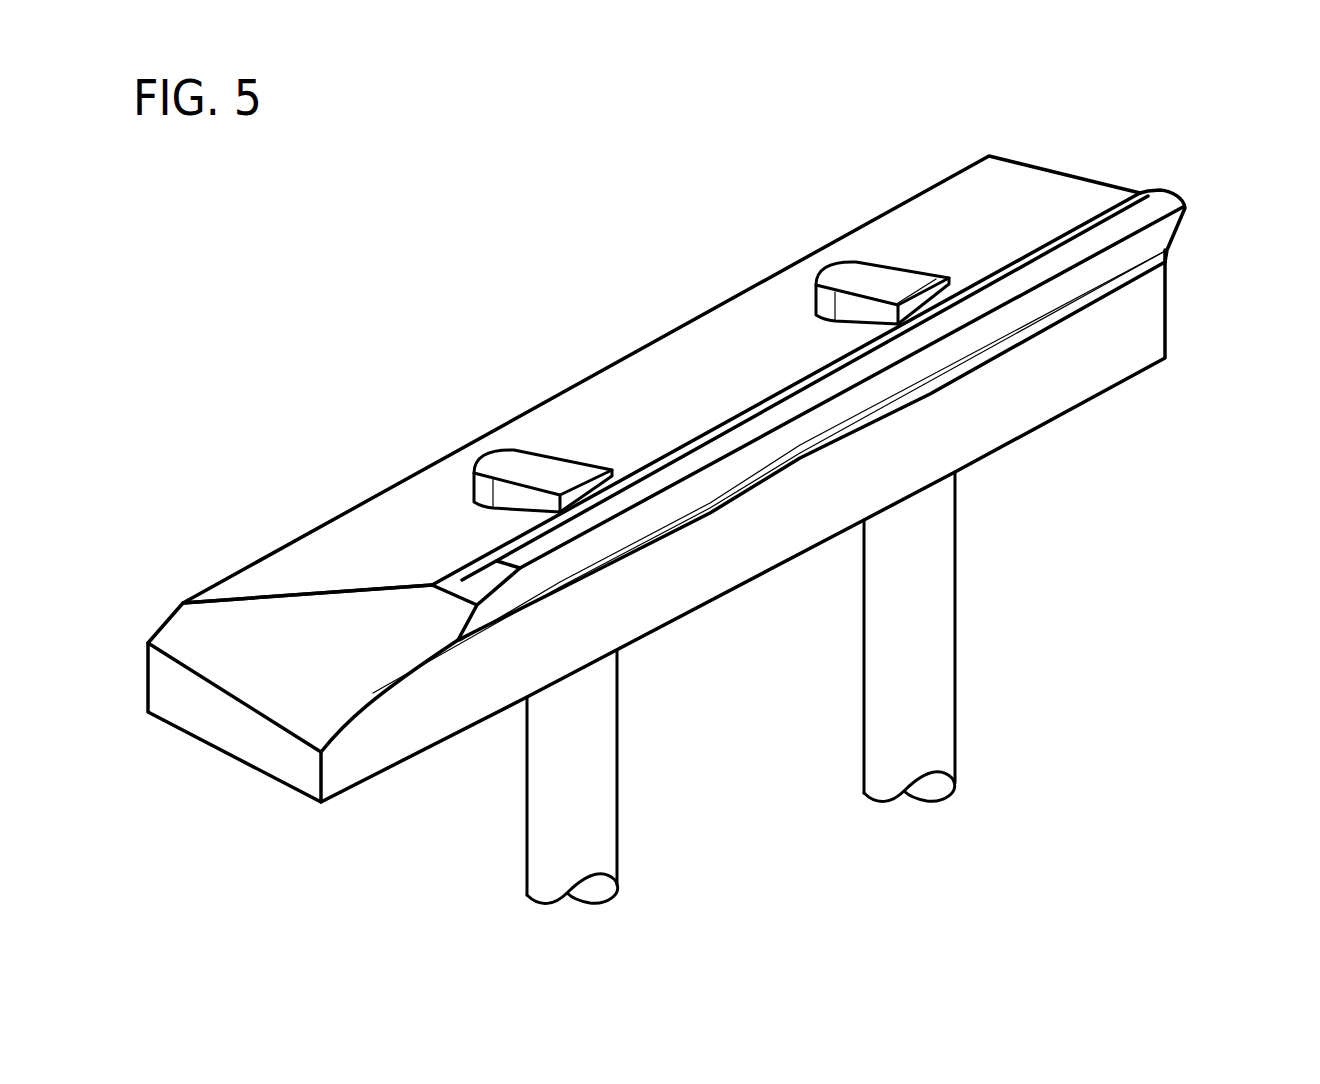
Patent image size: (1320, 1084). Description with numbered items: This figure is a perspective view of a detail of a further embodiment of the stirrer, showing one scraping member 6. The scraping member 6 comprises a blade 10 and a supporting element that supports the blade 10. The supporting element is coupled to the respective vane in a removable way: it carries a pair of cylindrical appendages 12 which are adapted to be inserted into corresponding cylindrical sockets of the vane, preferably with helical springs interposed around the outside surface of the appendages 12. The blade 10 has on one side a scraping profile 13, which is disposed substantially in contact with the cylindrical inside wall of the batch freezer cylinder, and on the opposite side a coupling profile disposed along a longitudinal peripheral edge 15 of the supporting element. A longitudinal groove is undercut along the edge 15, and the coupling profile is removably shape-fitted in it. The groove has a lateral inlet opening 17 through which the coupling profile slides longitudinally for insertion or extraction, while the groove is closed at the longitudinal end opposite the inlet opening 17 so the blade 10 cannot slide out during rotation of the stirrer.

The scraping member 6 is at (708, 502).
The blade 10 is at (1202, 195).
The cylindrical appendages 12 is at (590, 803).
The scraping profile 13 is at (692, 462).
The longitudinal peripheral edge 15 is at (1058, 388).
The inlet opening 17 is at (1084, 168).